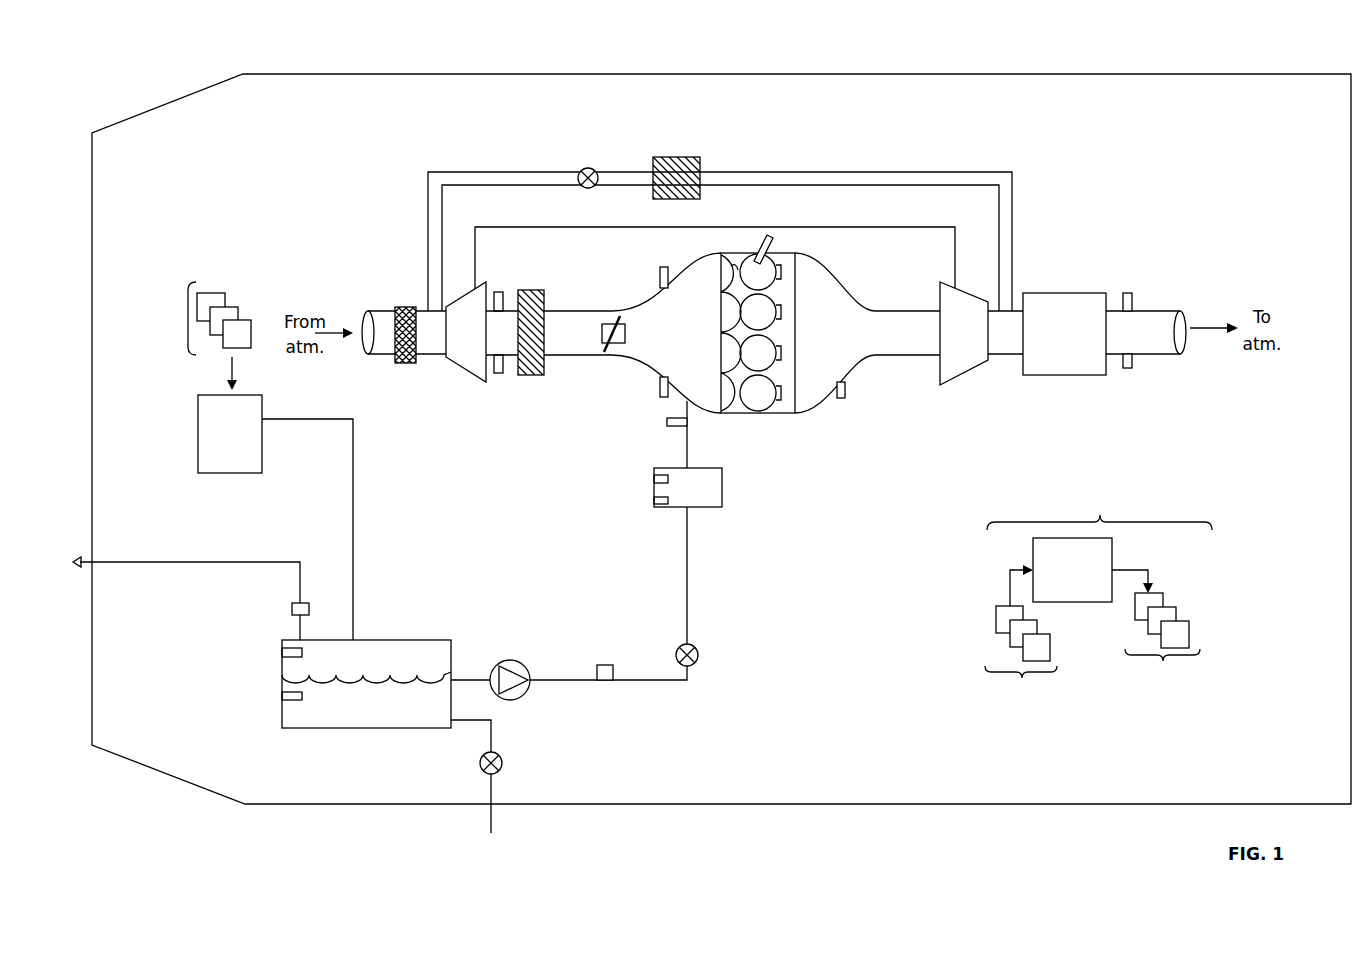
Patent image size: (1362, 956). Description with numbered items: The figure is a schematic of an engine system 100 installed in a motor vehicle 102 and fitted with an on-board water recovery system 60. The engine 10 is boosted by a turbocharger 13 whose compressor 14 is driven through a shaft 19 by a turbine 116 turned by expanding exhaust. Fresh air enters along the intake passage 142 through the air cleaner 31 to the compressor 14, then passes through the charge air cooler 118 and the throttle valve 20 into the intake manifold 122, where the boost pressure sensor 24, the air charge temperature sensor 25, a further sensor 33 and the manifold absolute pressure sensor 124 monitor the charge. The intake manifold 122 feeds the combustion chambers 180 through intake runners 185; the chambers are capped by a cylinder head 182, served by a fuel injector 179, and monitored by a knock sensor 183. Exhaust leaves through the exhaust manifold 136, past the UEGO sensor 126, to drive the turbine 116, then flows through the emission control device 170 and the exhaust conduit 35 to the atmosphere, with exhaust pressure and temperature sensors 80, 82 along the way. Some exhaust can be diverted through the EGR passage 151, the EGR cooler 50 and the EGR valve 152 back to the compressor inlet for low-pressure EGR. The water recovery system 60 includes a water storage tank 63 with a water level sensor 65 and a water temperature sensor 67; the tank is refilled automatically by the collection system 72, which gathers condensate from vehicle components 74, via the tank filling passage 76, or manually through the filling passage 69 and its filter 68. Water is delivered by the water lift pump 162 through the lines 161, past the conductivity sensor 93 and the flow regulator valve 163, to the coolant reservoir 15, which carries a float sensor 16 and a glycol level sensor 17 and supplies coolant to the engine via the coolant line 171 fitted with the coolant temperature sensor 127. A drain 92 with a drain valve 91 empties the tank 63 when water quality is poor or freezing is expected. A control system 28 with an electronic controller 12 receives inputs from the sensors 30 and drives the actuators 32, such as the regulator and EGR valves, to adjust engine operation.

The motor vehicle 102 is at (722, 74).
The engine system 100 is at (1096, 127).
The engine 10 is at (735, 236).
The controller 12 is at (1072, 570).
The turbocharger 13 is at (510, 214).
The compressor 14 is at (466, 332).
The coolant reservoir 15 is at (688, 487).
The float sensor 16 is at (654, 478).
The glycol level sensor 17 is at (654, 500).
The shaft 19 is at (877, 227).
The throttle valve 20 is at (625, 332).
The boost pressure sensor 24 is at (500, 370).
The air charge temperature sensor 25 is at (496, 294).
The control system 28 is at (1099, 498).
The sensors 30 is at (1021, 643).
The air cleaner 31 is at (398, 307).
The actuators 32 is at (1163, 637).
The intake sensor 33 is at (659, 272).
The exhaust conduit 35 is at (1163, 310).
The EGR cooler 50 is at (688, 157).
The on-board water recovery system 60 is at (374, 764).
The water storage tank 63 is at (425, 640).
The water level sensor 65 is at (283, 650).
The water temperature sensor 67 is at (283, 695).
The filter 68 is at (309, 610).
The water filling passage 69 is at (222, 562).
The collection system 72 is at (230, 434).
The vehicle components 74 is at (186, 318).
The water tank filling passage 76 is at (353, 527).
The exhaust pressure and temperature sensor 80 is at (1130, 293).
The exhaust pressure and temperature sensor 82 is at (1128, 368).
The drain valve 91 is at (500, 757).
The drain 92 is at (493, 738).
The conductivity sensor 93 is at (605, 665).
The turbine 116 is at (964, 333).
The charge air cooler 118 is at (536, 290).
The intake manifold 122 is at (666, 333).
The manifold absolute pressure sensor 124 is at (659, 380).
The UEGO sensor 126 is at (845, 390).
The engine coolant temperature sensor 127 is at (667, 421).
The exhaust manifold 136 is at (867, 333).
The intake passage 142 is at (378, 355).
The EGR passage 151 is at (786, 172).
The EGR valve 152 is at (595, 170).
The water line 161 is at (688, 560).
The water lift pump 162 is at (525, 666).
The flow regulator valve 163 is at (697, 663).
The emission control device 170 is at (1054, 293).
The coolant line 171 is at (688, 442).
The fuel injector 179 is at (770, 236).
The combustion chamber 180 is at (793, 263).
The cylinder head 182 is at (796, 330).
The knock sensor 183 is at (777, 388).
The intake runners 185 is at (731, 265).